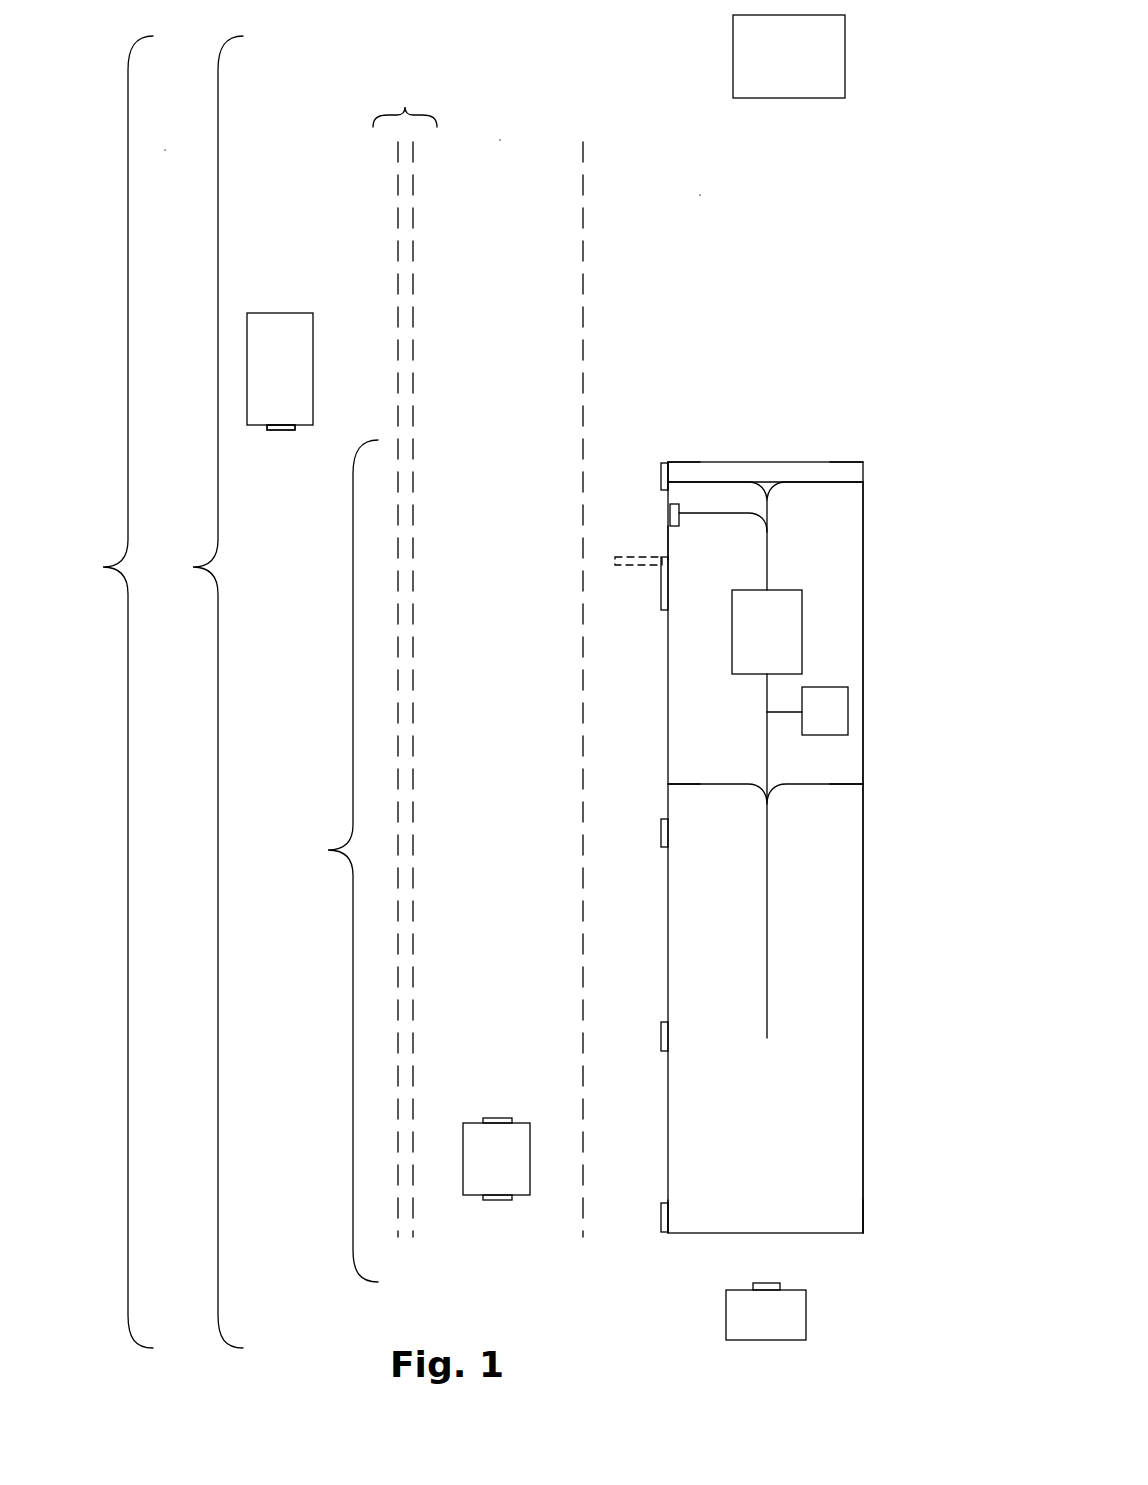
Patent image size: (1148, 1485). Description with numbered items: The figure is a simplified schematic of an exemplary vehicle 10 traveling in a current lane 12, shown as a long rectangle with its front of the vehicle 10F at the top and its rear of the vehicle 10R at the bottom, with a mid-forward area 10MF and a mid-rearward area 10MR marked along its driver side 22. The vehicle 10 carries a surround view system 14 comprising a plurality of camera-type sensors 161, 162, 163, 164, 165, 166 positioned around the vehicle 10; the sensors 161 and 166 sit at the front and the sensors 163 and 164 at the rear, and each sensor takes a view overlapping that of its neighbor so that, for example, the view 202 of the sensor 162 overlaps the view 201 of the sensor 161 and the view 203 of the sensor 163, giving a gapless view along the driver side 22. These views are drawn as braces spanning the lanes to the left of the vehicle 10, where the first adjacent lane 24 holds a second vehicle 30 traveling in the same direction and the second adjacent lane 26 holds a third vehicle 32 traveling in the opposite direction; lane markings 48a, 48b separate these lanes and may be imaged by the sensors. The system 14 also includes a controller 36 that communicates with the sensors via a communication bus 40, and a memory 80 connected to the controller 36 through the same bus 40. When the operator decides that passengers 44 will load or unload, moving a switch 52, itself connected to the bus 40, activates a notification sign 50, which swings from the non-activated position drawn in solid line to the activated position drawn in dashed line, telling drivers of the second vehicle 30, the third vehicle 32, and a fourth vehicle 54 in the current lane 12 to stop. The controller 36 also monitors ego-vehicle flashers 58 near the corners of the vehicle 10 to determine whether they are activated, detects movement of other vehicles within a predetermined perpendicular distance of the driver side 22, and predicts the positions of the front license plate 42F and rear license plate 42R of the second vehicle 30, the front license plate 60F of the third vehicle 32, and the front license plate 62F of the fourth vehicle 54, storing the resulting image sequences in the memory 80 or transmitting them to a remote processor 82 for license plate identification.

The vehicle 10 is at (778, 462).
The front of the vehicle 10F is at (668, 462).
The mid-forward area of the vehicle 10MF is at (661, 833).
The mid-rearward area of the vehicle 10MR is at (661, 1038).
The rear of the vehicle 10R is at (661, 1217).
The current lane 12 is at (710, 179).
The surround view system 14 is at (765, 847).
The sensor 161 is at (668, 462).
The sensor 162 is at (668, 784).
The sensor 163 is at (668, 1233).
The sensor 164 is at (863, 1220).
The sensor 165 is at (863, 784).
The sensor 166 is at (863, 462).
The view 201 is at (332, 861).
The view 202 is at (195, 692).
The view 203 is at (102, 692).
The driver side of the vehicle 22 is at (670, 539).
The first adjacent lane 24 is at (508, 123).
The second adjacent lane 26 is at (174, 188).
The second vehicle 30 is at (575, 1170).
The third vehicle 32 is at (280, 371).
The controller 36 is at (767, 632).
The communication bus 40 is at (767, 845).
The front license plate 42F is at (497, 1118).
The rear license plate 42R is at (497, 1200).
The passengers 44 is at (898, 930).
The lane marking 48a is at (583, 188).
The lane marking 48b is at (405, 658).
The notification sign 50 is at (661, 598).
The switch 52 is at (670, 514).
The fourth vehicle 54 is at (766, 1315).
The ego-vehicle flasher 58 is at (661, 478).
The front license plate 60F is at (283, 430).
The front license plate 62F is at (770, 1283).
The memory 80 is at (807, 711).
The remote processor 82 is at (789, 56).